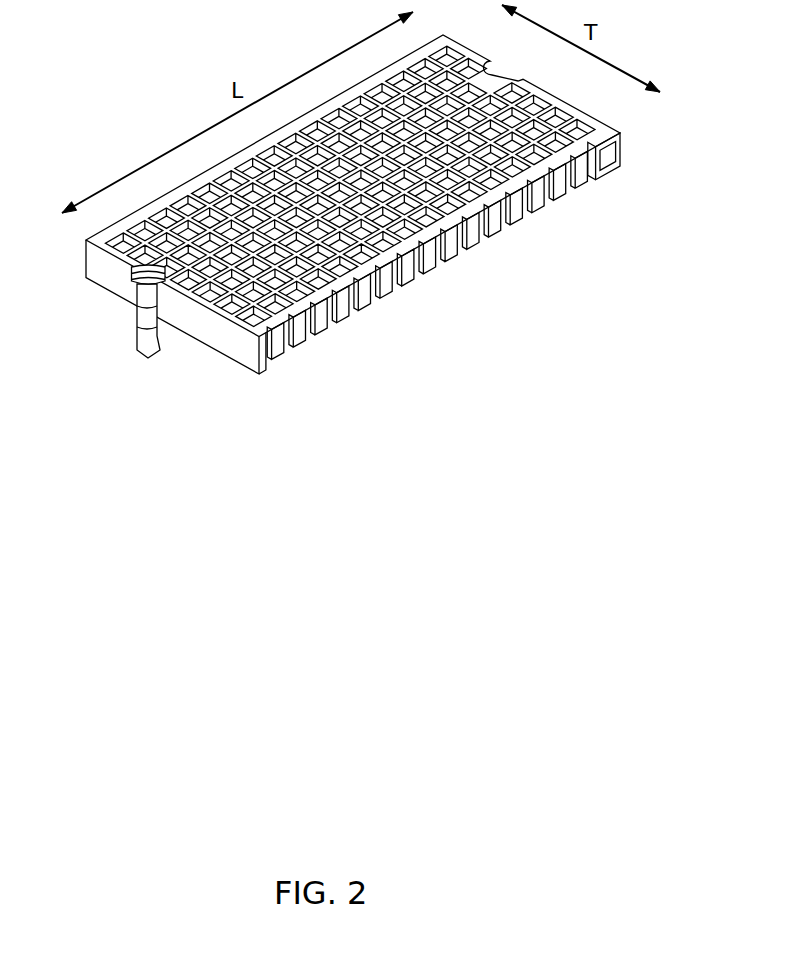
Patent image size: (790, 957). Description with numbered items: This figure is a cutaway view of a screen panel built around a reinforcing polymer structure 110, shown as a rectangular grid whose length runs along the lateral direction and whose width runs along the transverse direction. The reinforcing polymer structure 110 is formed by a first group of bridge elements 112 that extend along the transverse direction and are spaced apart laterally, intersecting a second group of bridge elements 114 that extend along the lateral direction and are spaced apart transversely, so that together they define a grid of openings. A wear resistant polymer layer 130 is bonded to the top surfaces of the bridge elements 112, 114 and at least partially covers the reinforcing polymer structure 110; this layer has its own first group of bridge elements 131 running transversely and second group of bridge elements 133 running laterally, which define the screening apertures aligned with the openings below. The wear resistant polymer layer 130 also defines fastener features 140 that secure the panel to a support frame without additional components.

The reinforcing polymer structure 110 is at (371, 247).
The first group of bridge elements 112 is at (597, 177).
The second group of bridge elements 114 is at (566, 180).
The wear resistant polymer layer 130 is at (118, 253).
The first group of bridge elements 131 is at (572, 132).
The second group of bridge elements 133 is at (545, 117).
The fastener features 140 is at (297, 333).